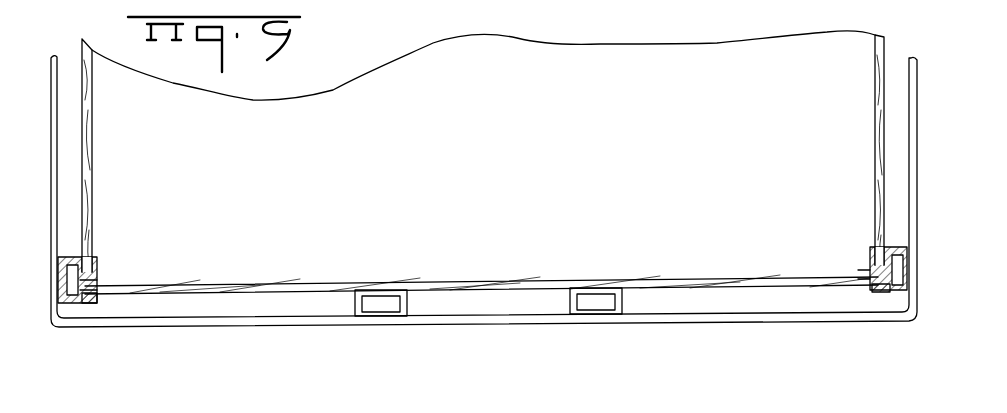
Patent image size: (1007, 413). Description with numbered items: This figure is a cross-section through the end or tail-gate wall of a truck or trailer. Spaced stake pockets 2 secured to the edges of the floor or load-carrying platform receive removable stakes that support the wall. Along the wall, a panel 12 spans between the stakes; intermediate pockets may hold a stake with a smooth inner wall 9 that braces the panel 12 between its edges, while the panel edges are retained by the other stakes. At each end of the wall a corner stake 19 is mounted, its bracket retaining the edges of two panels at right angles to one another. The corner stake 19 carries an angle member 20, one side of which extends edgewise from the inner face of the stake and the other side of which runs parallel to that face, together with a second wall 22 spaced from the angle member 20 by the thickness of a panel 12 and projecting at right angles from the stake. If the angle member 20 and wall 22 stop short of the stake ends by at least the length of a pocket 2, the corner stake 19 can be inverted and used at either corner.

The stake pocket 2 is at (66, 256).
The stake with smooth inner wall 9 is at (370, 317).
The panel 12 is at (93, 143).
The corner stake 19 is at (77, 298).
The angle member 20 is at (94, 281).
The second wall 22 is at (94, 298).